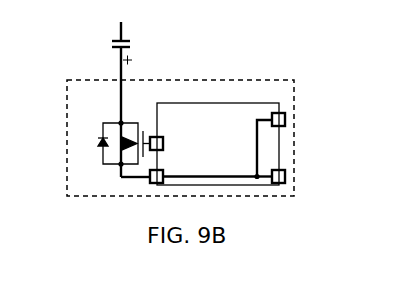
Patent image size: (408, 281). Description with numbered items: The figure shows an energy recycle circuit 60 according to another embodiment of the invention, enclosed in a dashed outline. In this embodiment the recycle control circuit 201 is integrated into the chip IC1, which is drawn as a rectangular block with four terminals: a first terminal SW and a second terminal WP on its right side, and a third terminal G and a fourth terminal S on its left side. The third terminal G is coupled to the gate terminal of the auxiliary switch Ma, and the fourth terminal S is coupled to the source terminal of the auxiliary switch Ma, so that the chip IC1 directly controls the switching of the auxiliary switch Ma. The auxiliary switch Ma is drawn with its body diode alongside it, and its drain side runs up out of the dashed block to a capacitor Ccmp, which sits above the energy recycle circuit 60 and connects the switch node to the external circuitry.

The energy recycle circuit 60 is at (100, 184).
The recycle control circuit 201 is at (236, 146).
The compensation capacitor Ccmp is at (91, 43).
The auxiliary switch Ma is at (113, 112).
The chip IC1 is at (228, 103).